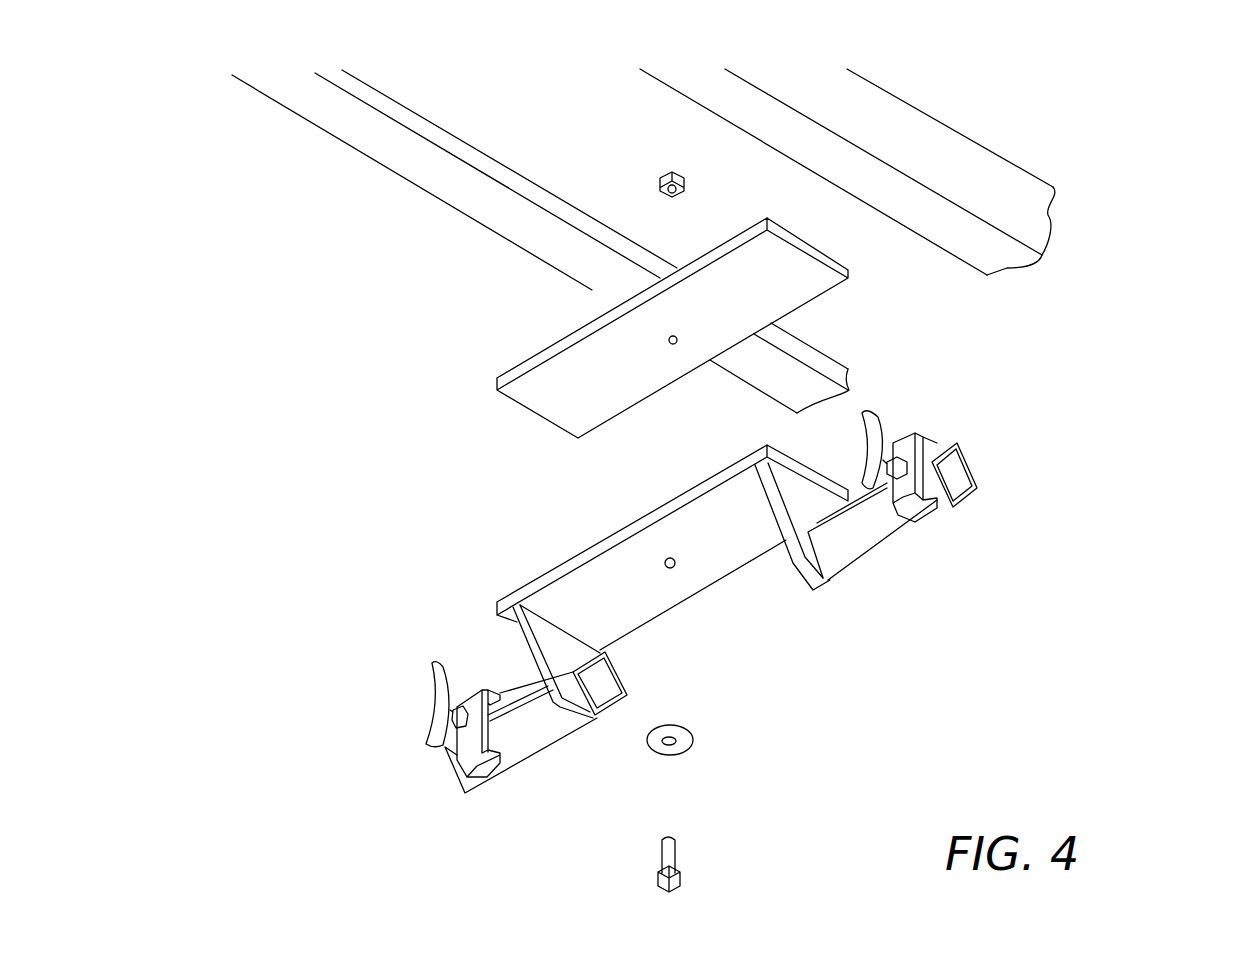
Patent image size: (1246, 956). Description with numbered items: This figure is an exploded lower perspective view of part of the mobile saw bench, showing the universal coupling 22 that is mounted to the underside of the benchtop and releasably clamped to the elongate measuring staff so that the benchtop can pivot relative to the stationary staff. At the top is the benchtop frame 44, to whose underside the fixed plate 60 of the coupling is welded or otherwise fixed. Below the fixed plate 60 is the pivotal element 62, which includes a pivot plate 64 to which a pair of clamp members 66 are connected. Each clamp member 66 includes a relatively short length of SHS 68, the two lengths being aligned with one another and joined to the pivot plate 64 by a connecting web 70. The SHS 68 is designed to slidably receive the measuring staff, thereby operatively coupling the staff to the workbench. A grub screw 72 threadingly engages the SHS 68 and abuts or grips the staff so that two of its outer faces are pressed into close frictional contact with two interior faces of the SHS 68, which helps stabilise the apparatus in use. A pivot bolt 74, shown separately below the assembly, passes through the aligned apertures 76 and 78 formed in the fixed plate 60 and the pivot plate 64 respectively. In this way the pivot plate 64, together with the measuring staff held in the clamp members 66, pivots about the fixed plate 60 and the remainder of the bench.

The universal coupling 22 is at (1196, 517).
The benchtop frame 44 is at (960, 163).
The fixed plate 60 is at (800, 295).
The pivotal element 62 is at (924, 636).
The pivot plate 64 is at (607, 572).
The clamp member 66 is at (406, 695).
The SHS 68 is at (530, 737).
The connecting web 70 is at (547, 647).
The grub screw 72 is at (884, 440).
The pivot bolt 74 is at (668, 857).
The aperture 76 is at (668, 340).
The aperture 78 is at (677, 563).